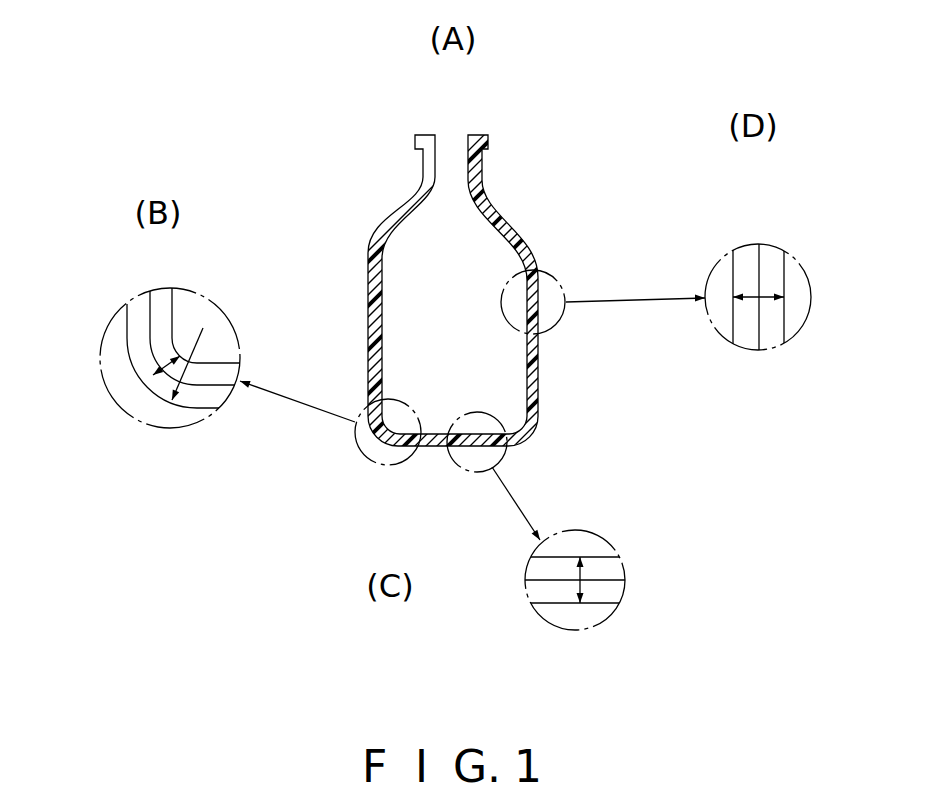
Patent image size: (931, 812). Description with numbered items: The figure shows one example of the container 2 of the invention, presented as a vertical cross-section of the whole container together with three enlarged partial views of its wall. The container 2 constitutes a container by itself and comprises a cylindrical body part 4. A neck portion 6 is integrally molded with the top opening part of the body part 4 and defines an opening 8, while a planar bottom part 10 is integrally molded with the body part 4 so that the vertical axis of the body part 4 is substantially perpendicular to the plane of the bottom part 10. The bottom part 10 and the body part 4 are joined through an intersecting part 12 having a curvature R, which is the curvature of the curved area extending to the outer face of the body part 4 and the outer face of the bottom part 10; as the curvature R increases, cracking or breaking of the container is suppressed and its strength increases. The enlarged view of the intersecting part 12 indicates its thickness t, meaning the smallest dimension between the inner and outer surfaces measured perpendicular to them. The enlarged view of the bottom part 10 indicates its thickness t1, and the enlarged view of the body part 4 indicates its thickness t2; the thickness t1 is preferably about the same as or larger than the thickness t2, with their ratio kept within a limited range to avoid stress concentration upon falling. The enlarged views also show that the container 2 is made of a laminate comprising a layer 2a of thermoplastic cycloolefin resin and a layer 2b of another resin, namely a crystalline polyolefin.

The container 2 is at (549, 272).
The layer comprising a thermoplastic cycloolefin resin 2a is at (163, 297).
The layer comprising the other resin 2b is at (135, 308).
The cylindrical body part 4 is at (540, 374).
The neck portion 6 is at (480, 156).
The opening 8 is at (449, 152).
The bottom part 10 is at (507, 446).
The intersecting part 12 is at (360, 448).
The curvature R is at (208, 332).
The thickness of the intersecting part t is at (163, 397).
The thickness of the bottom part t1 is at (580, 583).
The thickness of the body part t2 is at (762, 298).